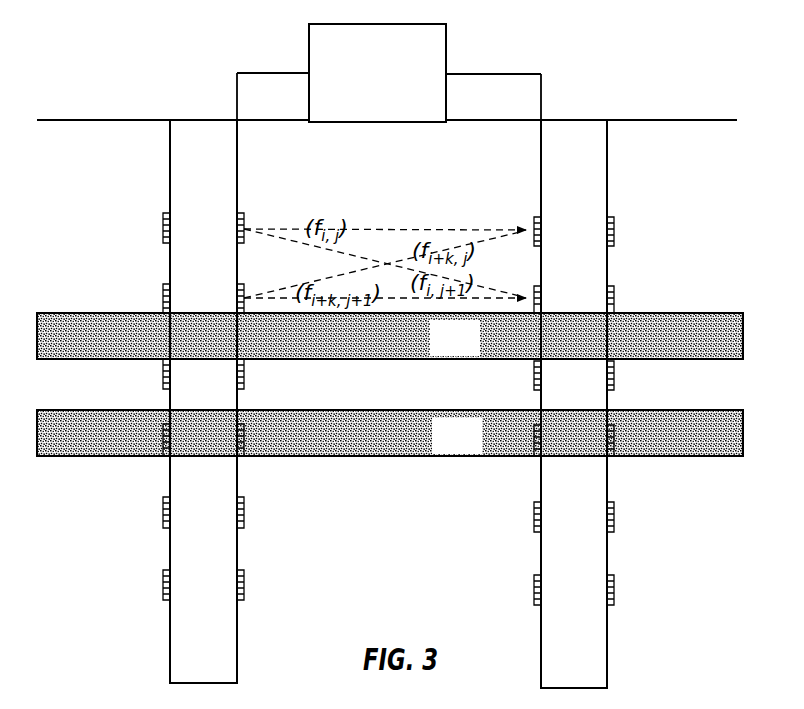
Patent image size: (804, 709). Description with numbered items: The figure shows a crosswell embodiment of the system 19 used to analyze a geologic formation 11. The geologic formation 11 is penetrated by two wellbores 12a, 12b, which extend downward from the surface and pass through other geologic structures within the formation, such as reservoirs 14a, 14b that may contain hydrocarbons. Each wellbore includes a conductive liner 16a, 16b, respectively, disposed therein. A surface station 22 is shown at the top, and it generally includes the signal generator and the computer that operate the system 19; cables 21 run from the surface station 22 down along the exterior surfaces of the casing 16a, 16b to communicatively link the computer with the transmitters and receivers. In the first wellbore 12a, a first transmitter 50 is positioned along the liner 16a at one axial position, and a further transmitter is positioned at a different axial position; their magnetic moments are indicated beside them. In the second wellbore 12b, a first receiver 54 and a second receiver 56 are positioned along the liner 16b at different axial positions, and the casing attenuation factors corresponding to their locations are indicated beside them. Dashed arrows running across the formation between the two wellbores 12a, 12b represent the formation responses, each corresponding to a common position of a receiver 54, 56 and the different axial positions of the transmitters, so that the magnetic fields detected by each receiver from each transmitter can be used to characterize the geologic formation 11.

The system 19 is at (497, 72).
The cables 21 is at (390, 93).
The surface station 22 is at (390, 117).
The wellbore 12a is at (223, 175).
The wellbore 12b is at (597, 177).
The conductive liner 16a is at (264, 401).
The conductive liner 16b is at (512, 404).
The first transmitter 50 is at (134, 391).
The first receiver 54 is at (629, 220).
The second receiver 56 is at (641, 288).
The reservoir 14a is at (477, 352).
The reservoir 14b is at (479, 452).
The geologic formation 11 is at (406, 398).